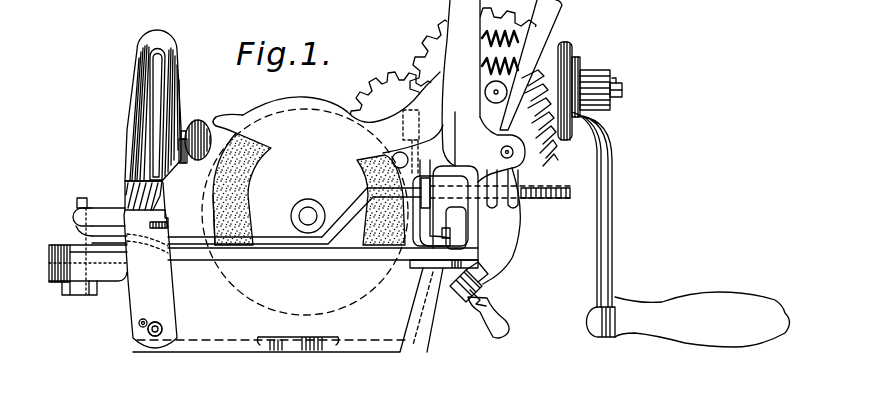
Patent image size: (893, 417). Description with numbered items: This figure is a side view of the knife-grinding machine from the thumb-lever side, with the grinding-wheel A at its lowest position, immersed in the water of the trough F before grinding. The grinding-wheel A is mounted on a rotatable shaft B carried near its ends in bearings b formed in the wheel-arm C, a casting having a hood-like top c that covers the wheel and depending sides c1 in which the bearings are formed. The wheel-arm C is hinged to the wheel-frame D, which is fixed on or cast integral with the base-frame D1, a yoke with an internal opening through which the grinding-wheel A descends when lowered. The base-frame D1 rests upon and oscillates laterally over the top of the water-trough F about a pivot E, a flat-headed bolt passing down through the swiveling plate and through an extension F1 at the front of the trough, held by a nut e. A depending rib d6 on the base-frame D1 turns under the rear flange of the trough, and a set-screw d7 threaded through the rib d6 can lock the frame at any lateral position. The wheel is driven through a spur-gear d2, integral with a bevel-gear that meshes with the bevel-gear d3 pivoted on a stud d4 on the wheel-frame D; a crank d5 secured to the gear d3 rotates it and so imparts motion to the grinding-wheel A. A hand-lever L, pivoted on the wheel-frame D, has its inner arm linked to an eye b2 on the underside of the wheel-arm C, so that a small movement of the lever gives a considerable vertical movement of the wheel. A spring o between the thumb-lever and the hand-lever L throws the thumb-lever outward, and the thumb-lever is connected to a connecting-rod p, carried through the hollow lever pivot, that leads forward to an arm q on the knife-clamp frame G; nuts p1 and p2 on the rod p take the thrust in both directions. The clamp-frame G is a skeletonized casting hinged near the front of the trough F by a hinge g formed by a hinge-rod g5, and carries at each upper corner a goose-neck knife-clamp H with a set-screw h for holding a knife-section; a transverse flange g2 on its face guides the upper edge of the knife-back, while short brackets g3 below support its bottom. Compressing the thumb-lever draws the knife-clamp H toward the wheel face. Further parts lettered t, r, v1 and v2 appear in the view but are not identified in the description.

The knife-clamp H is at (124, 80).
The set-screw h is at (202, 141).
The knife-clamp frame G is at (128, 204).
The hinge g is at (157, 321).
The rib or flange g2 is at (174, 195).
The ribs or brackets g3 is at (165, 217).
The hinge-rod g5 is at (155, 336).
The grinding-wheel A is at (220, 197).
The pivot E is at (76, 238).
The arm q is at (106, 218).
The nut e is at (79, 262).
The wheel-frame D is at (70, 244).
The extension F1 is at (62, 282).
The water-trough F is at (305, 259).
The connecting-rod p is at (258, 244).
The collar t is at (432, 190).
The nut p1 is at (489, 202).
The nut p2 is at (508, 202).
The wheel-arm C is at (328, 158).
The hood-like top c is at (237, 121).
The depending sides c1 is at (314, 153).
The rotatable shaft B is at (320, 214).
The bearings b is at (322, 206).
The base-frame D1 is at (366, 253).
The eye b2 is at (408, 123).
The tube v2 is at (427, 204).
The valve v1 is at (456, 228).
The hand-lever L is at (437, 91).
The arm r is at (487, 81).
The spring o is at (486, 70).
The spur-gear d2 is at (486, 94).
The stud d4 is at (622, 91).
The crank d5 is at (681, 229).
The bevel-gear d3 is at (507, 226).
The depending rib d6 is at (484, 281).
The set-screw d7 is at (506, 325).